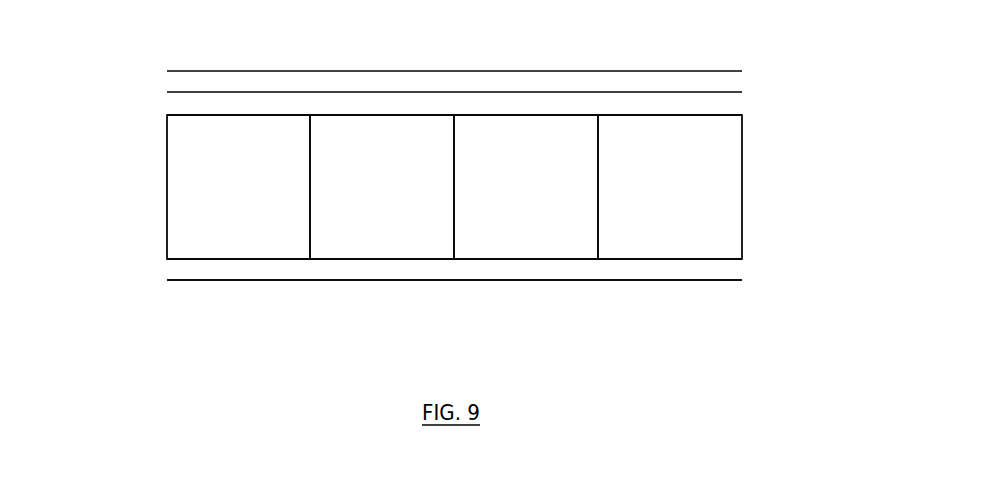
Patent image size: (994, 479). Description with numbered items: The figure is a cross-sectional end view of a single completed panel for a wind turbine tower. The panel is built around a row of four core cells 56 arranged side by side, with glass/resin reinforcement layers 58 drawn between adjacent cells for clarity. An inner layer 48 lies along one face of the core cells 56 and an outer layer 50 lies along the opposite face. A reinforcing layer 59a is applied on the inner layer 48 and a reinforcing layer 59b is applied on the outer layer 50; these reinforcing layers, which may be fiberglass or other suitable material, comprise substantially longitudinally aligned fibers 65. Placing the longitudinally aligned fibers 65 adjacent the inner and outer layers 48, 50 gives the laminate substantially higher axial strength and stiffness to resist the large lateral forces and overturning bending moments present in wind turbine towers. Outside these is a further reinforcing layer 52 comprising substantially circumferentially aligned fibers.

The inner layer 48 is at (454, 299).
The outer layer 50 is at (454, 140).
The reinforcing layer 52 is at (499, 59).
The core cells 56 is at (242, 160).
The glass/resin reinforcement layers 58 is at (494, 187).
The reinforcing layer 59a is at (397, 90).
The reinforcing layer 59b is at (396, 251).
The substantially longitudinally aligned fibers 65 is at (500, 170).